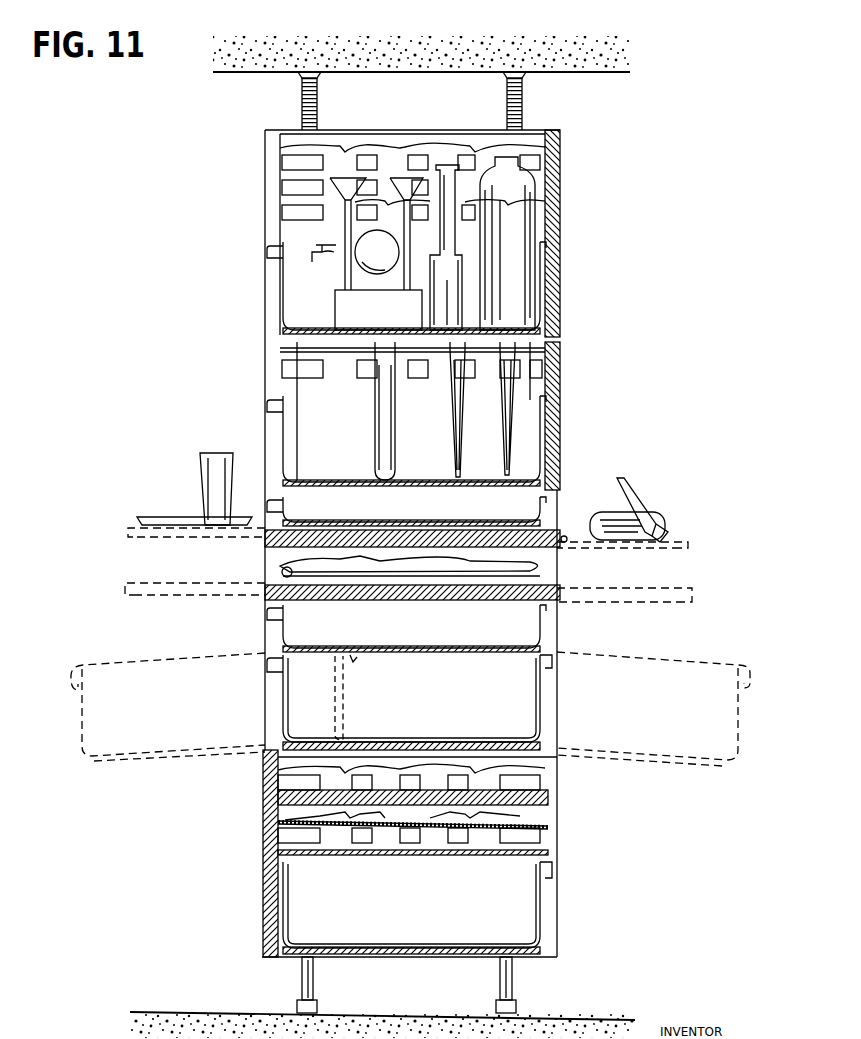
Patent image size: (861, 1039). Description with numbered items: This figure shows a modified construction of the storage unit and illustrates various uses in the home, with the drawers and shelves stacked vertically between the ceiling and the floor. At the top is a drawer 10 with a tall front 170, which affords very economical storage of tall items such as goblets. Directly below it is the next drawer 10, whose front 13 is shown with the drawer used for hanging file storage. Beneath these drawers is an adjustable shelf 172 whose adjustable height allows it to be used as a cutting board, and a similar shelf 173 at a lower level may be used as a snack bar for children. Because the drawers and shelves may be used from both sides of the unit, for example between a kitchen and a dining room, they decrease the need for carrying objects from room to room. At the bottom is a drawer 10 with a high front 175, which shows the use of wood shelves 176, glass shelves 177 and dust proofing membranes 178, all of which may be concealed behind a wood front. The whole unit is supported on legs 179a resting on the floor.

The drawer 10 is at (278, 297).
The front 13 is at (553, 370).
The tall front 170 is at (553, 200).
The adjustable shelf 172 is at (138, 538).
The shelf 173 is at (141, 598).
The high front 175 is at (268, 845).
The wood shelves 176 is at (545, 800).
The glass shelves 177 is at (548, 826).
The dust proofing membranes 178 is at (548, 854).
The legs 179a is at (305, 975).